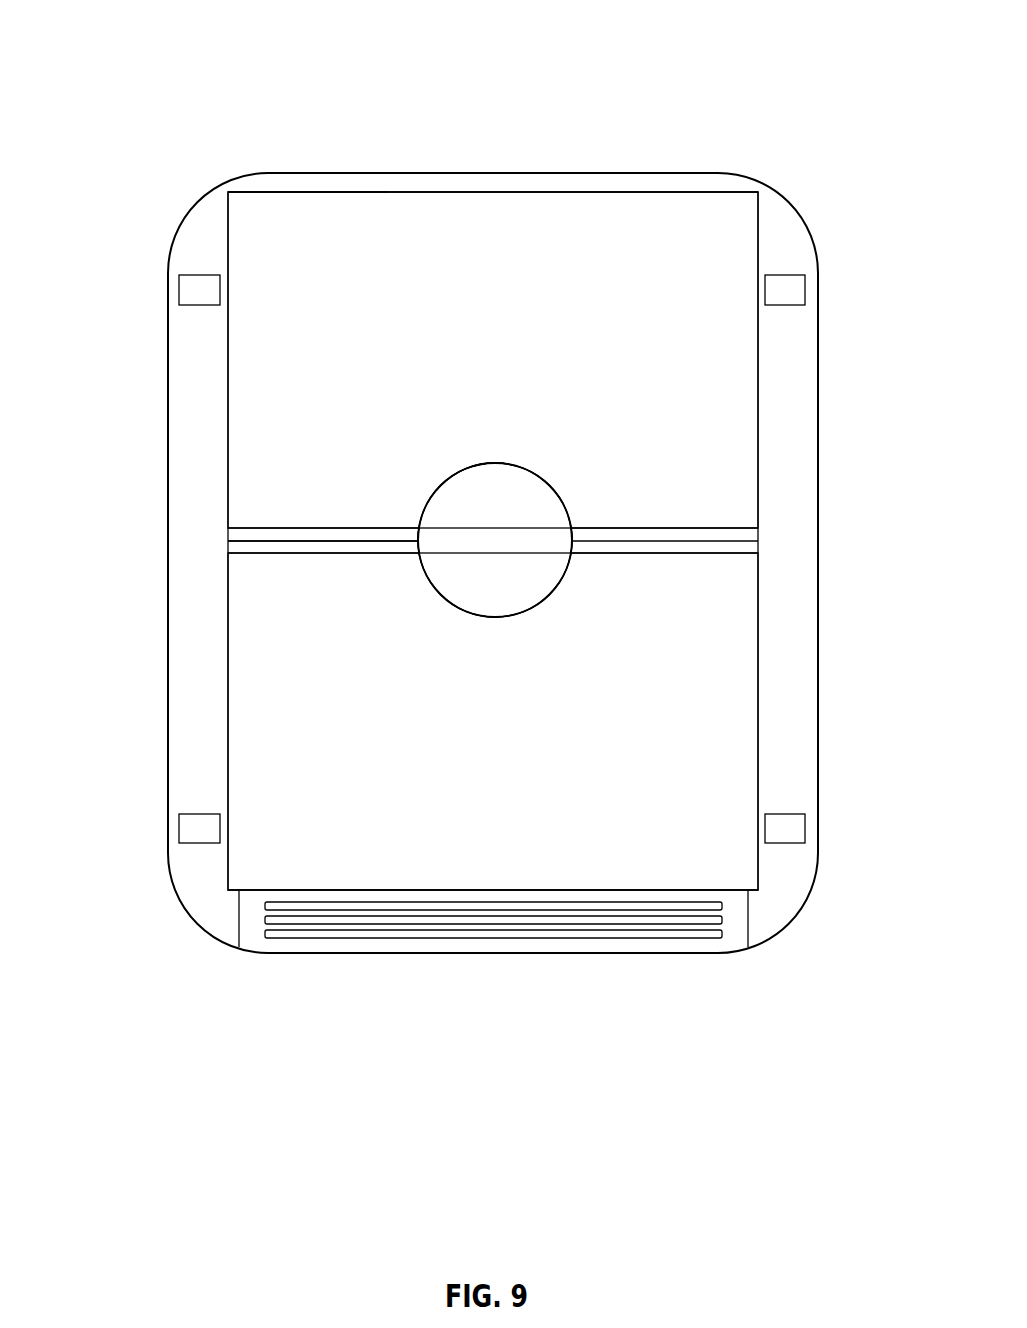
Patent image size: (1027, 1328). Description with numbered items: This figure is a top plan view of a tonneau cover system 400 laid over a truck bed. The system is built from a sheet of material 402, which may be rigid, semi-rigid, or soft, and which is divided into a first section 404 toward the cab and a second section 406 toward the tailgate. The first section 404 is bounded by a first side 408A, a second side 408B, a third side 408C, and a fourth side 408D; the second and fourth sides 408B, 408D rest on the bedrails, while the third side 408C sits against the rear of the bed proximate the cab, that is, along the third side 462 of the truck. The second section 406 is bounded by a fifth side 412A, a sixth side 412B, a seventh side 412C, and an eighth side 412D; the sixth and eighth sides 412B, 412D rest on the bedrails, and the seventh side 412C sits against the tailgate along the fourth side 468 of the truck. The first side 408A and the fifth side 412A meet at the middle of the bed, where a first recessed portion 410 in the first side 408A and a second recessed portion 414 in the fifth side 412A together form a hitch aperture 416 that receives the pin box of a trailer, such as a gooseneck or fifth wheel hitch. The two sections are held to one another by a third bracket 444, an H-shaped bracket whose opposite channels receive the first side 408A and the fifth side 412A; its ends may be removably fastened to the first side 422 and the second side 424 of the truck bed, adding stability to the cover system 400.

The tonneau cover system 400 is at (246, 46).
The sheet of material 402 is at (643, 210).
The first section 404 is at (713, 415).
The second section 406 is at (727, 625).
The first side 408A is at (755, 540).
The second side 408B is at (228, 235).
The third side 408C is at (387, 192).
The fourth side 408D is at (758, 255).
The first recessed portion 410 is at (466, 477).
The fifth side 412A is at (250, 550).
The sixth side 412B is at (758, 782).
The seventh side 412C is at (515, 887).
The eighth side 412D is at (220, 815).
The second recessed portion 414 is at (427, 605).
The hitch aperture 416 is at (422, 549).
The first side of the truck bed 422 is at (207, 492).
The second side of the truck bed 424 is at (780, 493).
The third bracket 444 is at (315, 542).
The third side of the truck 462 is at (497, 183).
The fourth side of the truck 468 is at (330, 946).